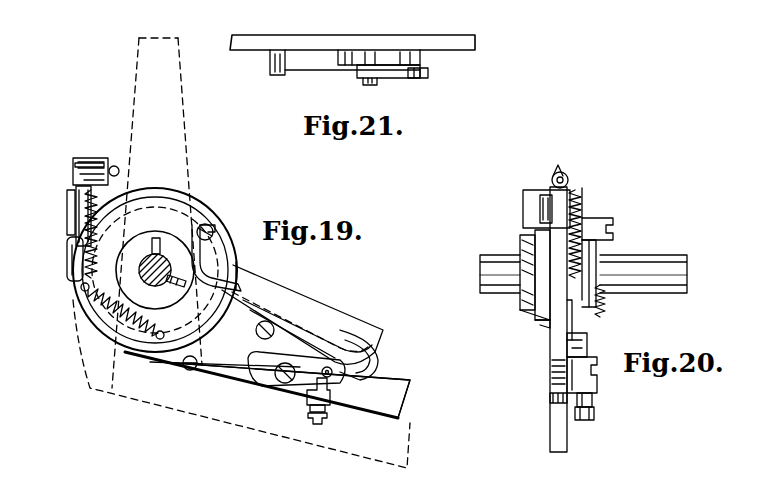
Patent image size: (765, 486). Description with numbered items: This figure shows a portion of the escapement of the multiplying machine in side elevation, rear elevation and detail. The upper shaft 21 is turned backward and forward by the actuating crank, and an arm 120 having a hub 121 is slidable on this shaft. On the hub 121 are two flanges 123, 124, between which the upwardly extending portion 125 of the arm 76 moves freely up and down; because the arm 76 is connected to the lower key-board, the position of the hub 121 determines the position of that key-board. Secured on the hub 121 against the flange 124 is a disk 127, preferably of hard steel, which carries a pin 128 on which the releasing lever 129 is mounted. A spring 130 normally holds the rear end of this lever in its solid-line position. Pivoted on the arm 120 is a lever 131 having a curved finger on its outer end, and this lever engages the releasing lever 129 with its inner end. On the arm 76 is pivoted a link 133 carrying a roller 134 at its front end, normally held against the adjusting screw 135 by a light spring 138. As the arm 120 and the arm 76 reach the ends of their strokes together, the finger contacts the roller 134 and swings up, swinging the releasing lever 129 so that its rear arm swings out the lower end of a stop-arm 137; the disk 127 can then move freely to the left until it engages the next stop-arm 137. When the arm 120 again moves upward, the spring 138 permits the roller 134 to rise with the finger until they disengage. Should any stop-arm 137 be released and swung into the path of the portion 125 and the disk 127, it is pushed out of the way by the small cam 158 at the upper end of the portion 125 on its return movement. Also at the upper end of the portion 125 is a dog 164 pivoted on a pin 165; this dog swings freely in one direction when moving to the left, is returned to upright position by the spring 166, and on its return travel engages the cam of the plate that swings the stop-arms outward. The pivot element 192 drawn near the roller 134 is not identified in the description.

In FIG. 19, the shaft 21 is at (143, 283).
In FIG. 20, the shaft 21 is at (655, 265).
In FIG. 19, the bar 76 is at (285, 390).
In FIG. 21, the bar 76 is at (369, 38).
In FIG. 20, the bar 76 is at (552, 418).
In FIG. 19, the arm 120 is at (273, 288).
In FIG. 19, the hub 121 is at (153, 286).
In FIG. 20, the hub 121 is at (524, 315).
In FIG. 20, the collar 123 is at (540, 323).
In FIG. 20, the sleeve 124 is at (566, 333).
In FIG. 19, the spring 125 is at (84, 222).
In FIG. 20, the spring 125 is at (548, 258).
In FIG. 19, the screw 127 is at (207, 223).
In FIG. 20, the screw 127 is at (593, 340).
In FIG. 19, the bracket 128 is at (210, 230).
In FIG. 20, the bracket 128 is at (613, 224).
In FIG. 19, the bracket arm 129 is at (202, 248).
In FIG. 20, the bracket arm 129 is at (597, 250).
In FIG. 19, the spring 130 is at (107, 340).
In FIG. 20, the spring 130 is at (608, 313).
In FIG. 19, the fork 131 is at (330, 323).
In FIG. 19, the clamp block 133 is at (301, 374).
In FIG. 21, the clamp block 133 is at (392, 78).
In FIG. 20, the clamp block 133 is at (593, 375).
In FIG. 19, the nut 134 is at (366, 356).
In FIG. 21, the nut 134 is at (430, 72).
In FIG. 19, the nut 135 is at (325, 415).
In FIG. 20, the nut 135 is at (597, 413).
In FIG. 19, the plunger 137 is at (69, 257).
In FIG. 19, the plate 138 is at (230, 363).
In FIG. 21, the plate 138 is at (322, 70).
In FIG. 19, the housing 158 is at (70, 208).
In FIG. 20, the housing 158 is at (528, 205).
In FIG. 19, the cap 164 is at (88, 160).
In FIG. 20, the cap 164 is at (566, 168).
In FIG. 19, the washer 165 is at (76, 170).
In FIG. 20, the washer 165 is at (569, 182).
In FIG. 19, the bracket 166 is at (68, 192).
In FIG. 20, the bracket 166 is at (592, 205).
In FIG. 19, the pivot 192 is at (335, 372).